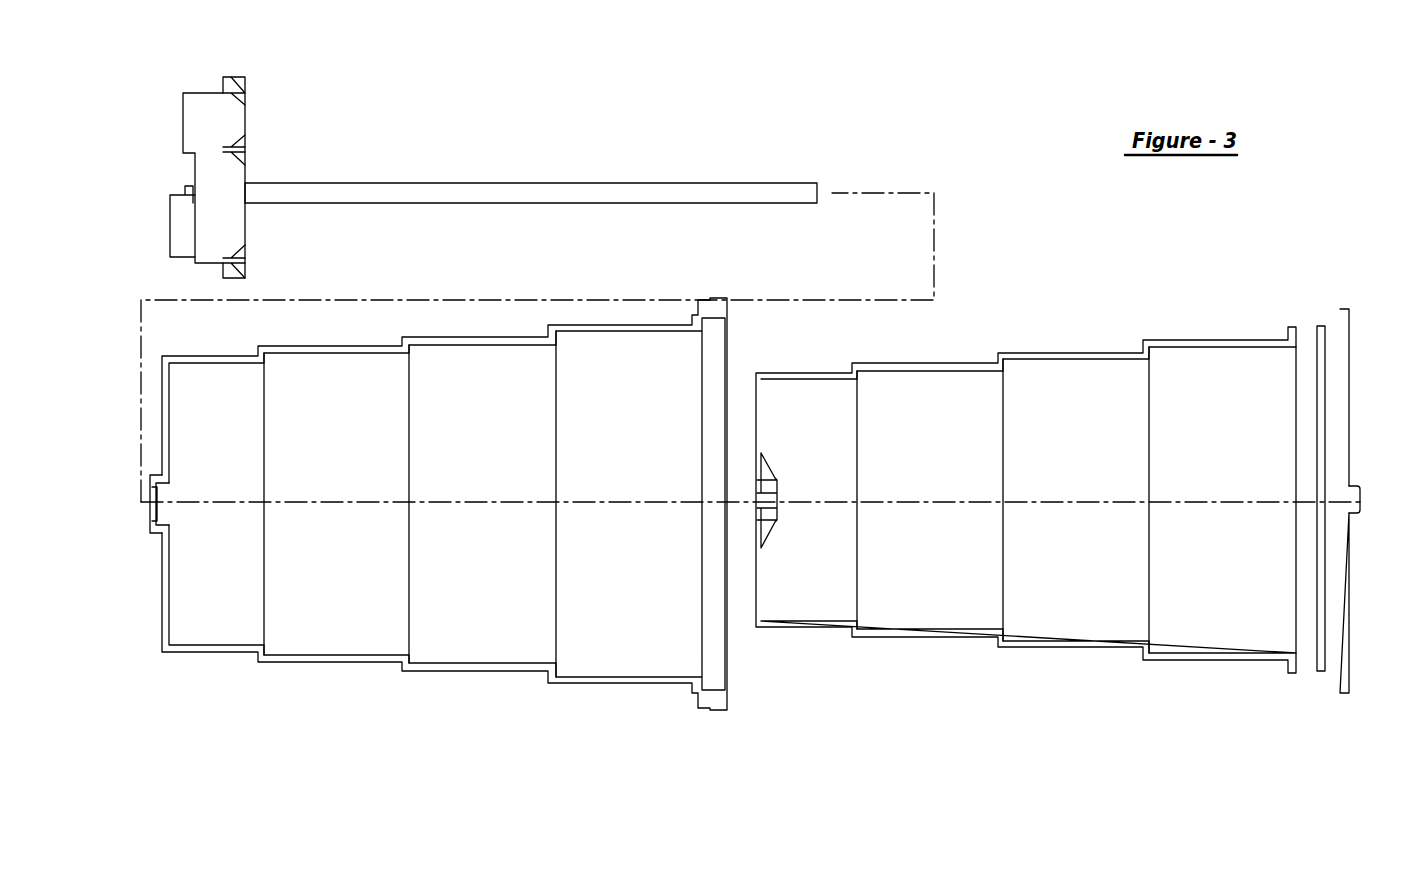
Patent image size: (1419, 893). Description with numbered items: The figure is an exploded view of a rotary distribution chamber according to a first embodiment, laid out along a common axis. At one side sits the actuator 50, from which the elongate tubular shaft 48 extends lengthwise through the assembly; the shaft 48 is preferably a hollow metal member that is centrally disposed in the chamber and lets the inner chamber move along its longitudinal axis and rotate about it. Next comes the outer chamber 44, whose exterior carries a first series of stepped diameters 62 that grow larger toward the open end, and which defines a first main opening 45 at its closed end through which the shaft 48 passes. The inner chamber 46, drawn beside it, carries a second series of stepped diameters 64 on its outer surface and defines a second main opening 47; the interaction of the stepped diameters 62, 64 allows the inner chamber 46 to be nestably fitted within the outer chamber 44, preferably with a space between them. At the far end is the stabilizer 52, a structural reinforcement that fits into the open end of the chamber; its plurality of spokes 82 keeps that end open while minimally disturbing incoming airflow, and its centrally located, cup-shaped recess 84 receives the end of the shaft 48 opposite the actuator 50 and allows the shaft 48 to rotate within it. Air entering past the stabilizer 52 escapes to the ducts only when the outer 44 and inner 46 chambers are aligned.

The outer chamber 44 is at (240, 637).
The first main opening 45 is at (133, 520).
The inner chamber 46 is at (835, 612).
The second main opening 47 is at (760, 497).
The shaft 48 is at (316, 190).
The actuator 50 is at (186, 120).
The stabilizer 52 is at (1348, 426).
The first series of stepped diameters 62 is at (412, 567).
The second series of stepped diameters 64 is at (1010, 568).
The spokes 82 is at (1318, 322).
The recess 84 is at (1358, 500).